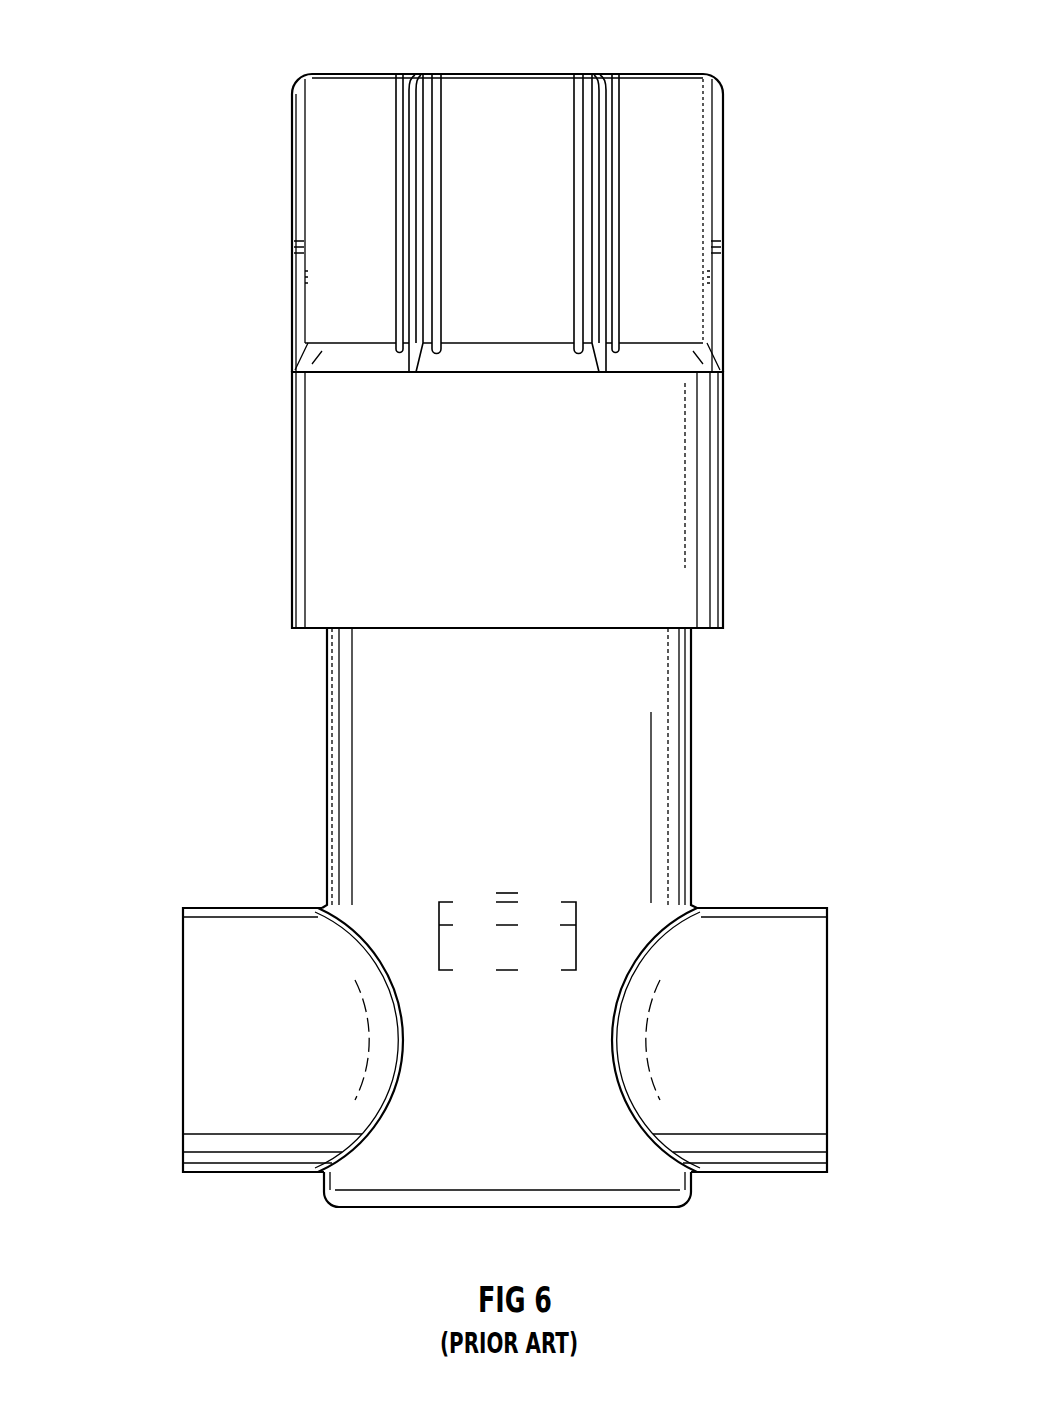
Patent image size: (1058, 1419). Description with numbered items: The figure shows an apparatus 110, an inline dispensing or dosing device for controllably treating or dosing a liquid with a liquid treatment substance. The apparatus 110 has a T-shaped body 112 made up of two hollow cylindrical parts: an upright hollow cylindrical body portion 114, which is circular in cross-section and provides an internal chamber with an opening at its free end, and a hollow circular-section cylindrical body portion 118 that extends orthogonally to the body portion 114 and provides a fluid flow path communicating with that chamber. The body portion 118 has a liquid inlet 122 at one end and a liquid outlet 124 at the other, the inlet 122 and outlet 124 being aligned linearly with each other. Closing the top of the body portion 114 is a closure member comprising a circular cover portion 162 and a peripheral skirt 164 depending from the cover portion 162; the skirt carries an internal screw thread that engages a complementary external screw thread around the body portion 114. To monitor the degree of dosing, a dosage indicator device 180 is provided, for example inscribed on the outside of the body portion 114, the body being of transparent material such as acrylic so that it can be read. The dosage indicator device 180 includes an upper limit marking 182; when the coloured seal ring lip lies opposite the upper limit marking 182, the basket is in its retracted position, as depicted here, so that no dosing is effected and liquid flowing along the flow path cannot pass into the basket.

The apparatus 110 is at (817, 113).
The T-shaped body 112 is at (723, 707).
The hollow cylindrical body portion 114 is at (634, 765).
The hollow circular-section cylindrical body portion 118 is at (461, 1152).
The liquid inlet 122 is at (183, 1013).
The liquid outlet 124 is at (827, 1045).
The circular cover portion 162 is at (528, 75).
The peripheral skirt 164 is at (673, 468).
The dosage indicator device 180 is at (590, 918).
The upper limit marking 182 is at (503, 893).